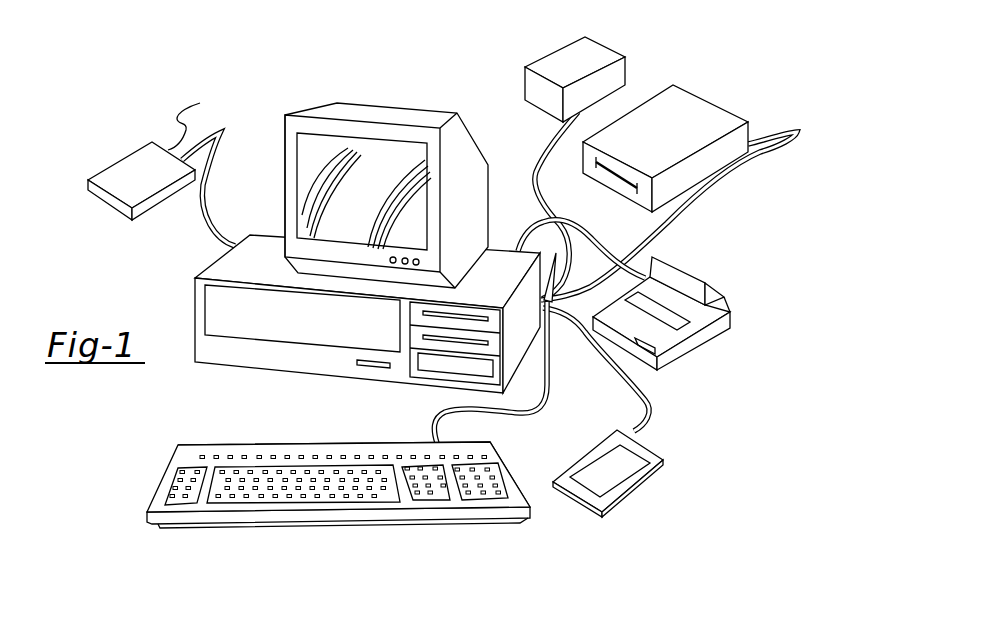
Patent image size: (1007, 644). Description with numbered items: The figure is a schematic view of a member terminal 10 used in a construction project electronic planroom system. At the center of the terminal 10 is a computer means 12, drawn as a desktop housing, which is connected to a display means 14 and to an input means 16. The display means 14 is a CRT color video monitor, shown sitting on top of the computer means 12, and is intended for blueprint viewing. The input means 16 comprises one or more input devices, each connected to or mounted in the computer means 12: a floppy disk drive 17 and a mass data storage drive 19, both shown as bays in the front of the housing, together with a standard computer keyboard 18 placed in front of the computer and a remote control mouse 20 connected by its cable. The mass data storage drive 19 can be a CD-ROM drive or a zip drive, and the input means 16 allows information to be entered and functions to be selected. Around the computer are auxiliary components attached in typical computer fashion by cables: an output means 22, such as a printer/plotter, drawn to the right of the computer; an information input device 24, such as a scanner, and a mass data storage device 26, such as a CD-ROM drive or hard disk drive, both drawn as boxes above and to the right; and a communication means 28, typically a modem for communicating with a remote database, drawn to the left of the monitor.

The member terminal 10 is at (326, 88).
The computer means 12 is at (327, 329).
The display means 14 is at (405, 117).
The input means 16 is at (508, 542).
The floppy disk drive 17 is at (417, 337).
The computer keyboard 18 is at (185, 460).
The mass data storage drive 19 is at (428, 367).
The remote control mouse 20 is at (667, 477).
The output means 22 is at (723, 328).
The information input device 24 is at (702, 118).
The mass data storage device 26 is at (588, 60).
The communication means 28 is at (123, 170).